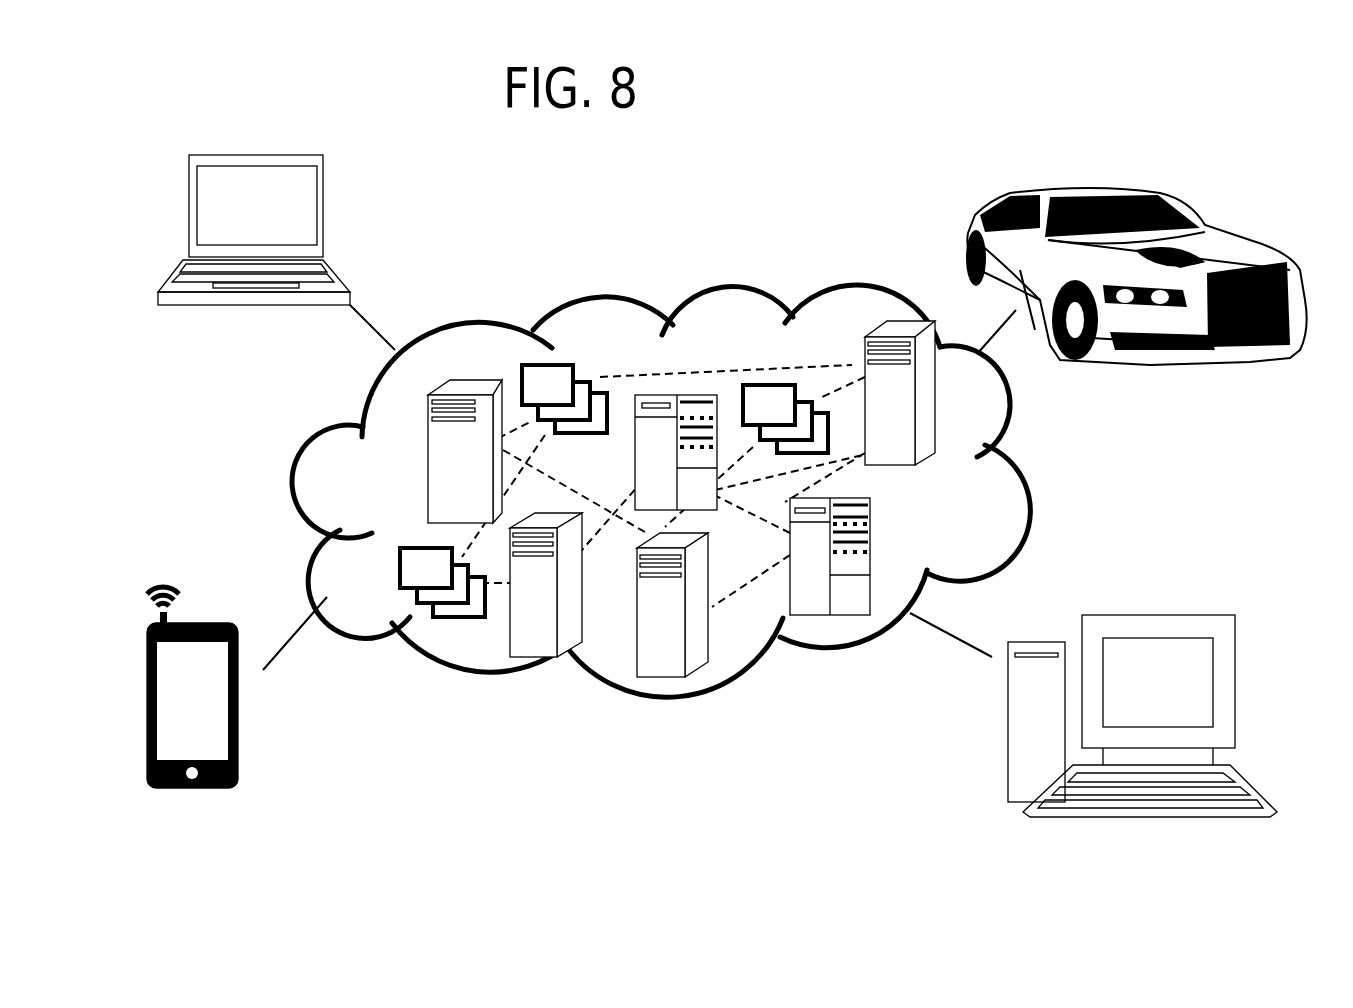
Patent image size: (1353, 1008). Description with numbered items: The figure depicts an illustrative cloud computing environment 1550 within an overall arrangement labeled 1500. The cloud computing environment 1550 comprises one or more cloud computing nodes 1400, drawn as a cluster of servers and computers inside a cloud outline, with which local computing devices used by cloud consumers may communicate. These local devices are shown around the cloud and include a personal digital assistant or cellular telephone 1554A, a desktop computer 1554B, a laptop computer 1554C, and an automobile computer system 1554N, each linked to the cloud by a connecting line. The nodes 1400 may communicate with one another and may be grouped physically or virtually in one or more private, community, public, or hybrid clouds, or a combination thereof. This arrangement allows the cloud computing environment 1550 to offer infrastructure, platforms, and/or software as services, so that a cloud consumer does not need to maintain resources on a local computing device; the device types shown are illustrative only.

The network system 1500 is at (1182, 116).
The cloud computing environment 1550 is at (1030, 472).
The cloud computing nodes 1400 is at (947, 488).
The personal digital assistant or cellular telephone 1554A is at (265, 740).
The desktop computer 1554B is at (1033, 718).
The laptop computer 1554C is at (338, 238).
The automobile computer system 1554N is at (960, 222).